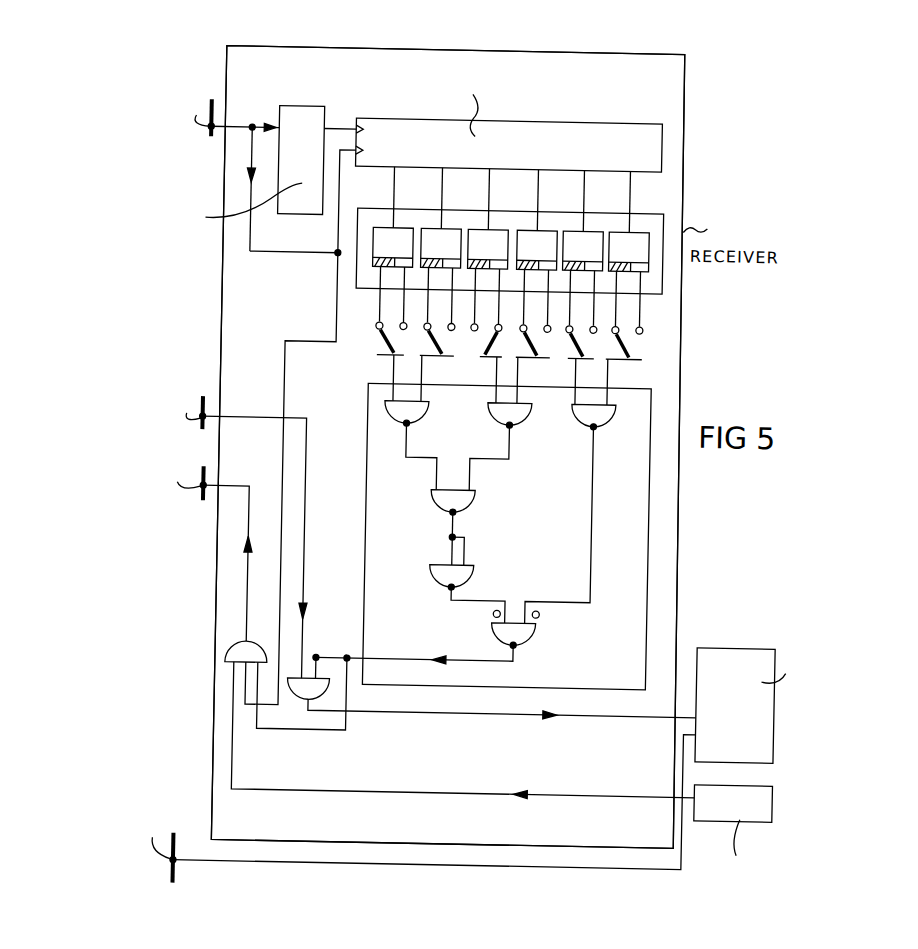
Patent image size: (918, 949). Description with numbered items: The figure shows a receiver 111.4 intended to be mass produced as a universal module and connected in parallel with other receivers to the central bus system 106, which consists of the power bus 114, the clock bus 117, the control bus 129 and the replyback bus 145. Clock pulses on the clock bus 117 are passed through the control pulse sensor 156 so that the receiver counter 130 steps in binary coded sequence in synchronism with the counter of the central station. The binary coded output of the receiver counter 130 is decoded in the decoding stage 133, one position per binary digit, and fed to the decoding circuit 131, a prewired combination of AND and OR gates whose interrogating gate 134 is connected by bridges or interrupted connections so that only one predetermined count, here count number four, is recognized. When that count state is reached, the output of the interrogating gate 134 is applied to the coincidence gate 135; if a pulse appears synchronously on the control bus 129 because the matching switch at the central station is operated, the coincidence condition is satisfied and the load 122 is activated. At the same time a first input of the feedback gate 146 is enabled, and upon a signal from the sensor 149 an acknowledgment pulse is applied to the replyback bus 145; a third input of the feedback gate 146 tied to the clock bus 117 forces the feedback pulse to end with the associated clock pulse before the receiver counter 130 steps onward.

The central bus system 106 is at (216, 76).
The receiver 111.4 is at (549, 68).
The clock bus 117 is at (207, 142).
The control pulse sensor 156 is at (295, 119).
The receiver counter 130 is at (567, 132).
The decoding stage 133 is at (648, 224).
The decoding circuit 131 is at (364, 394).
The interrogating gate 134 is at (367, 487).
The control bus 129 is at (209, 410).
The replyback bus 145 is at (208, 486).
The feedback gate 146 is at (254, 652).
The coincidence gate 135 is at (311, 686).
The load 122 is at (727, 657).
The sensor 149 is at (716, 812).
The power bus 114 is at (182, 846).